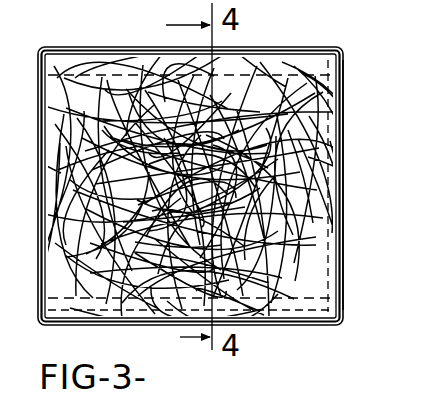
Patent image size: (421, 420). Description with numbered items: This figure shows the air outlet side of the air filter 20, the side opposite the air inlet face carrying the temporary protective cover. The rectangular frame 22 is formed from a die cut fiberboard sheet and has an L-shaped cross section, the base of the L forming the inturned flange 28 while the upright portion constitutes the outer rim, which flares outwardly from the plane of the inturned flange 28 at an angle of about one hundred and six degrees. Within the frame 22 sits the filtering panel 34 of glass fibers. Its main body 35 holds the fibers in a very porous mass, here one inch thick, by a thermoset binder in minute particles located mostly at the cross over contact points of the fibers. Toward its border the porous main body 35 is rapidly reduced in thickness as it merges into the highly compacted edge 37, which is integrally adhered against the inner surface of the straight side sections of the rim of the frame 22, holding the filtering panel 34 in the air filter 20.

The air filter 20 is at (346, 229).
The frame 22 is at (347, 124).
The inturned flange 28 is at (326, 171).
The filtering panel 34 is at (191, 184).
The main body 35 is at (338, 273).
The highly compacted edge 37 is at (341, 89).